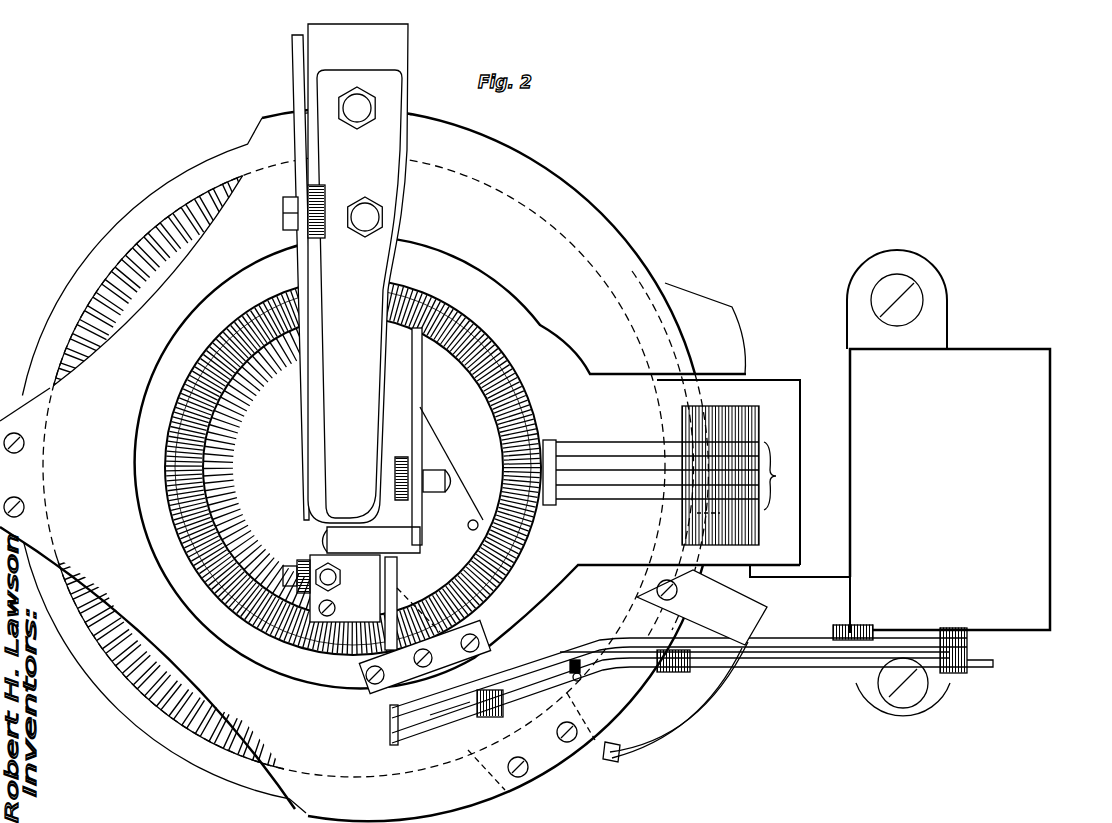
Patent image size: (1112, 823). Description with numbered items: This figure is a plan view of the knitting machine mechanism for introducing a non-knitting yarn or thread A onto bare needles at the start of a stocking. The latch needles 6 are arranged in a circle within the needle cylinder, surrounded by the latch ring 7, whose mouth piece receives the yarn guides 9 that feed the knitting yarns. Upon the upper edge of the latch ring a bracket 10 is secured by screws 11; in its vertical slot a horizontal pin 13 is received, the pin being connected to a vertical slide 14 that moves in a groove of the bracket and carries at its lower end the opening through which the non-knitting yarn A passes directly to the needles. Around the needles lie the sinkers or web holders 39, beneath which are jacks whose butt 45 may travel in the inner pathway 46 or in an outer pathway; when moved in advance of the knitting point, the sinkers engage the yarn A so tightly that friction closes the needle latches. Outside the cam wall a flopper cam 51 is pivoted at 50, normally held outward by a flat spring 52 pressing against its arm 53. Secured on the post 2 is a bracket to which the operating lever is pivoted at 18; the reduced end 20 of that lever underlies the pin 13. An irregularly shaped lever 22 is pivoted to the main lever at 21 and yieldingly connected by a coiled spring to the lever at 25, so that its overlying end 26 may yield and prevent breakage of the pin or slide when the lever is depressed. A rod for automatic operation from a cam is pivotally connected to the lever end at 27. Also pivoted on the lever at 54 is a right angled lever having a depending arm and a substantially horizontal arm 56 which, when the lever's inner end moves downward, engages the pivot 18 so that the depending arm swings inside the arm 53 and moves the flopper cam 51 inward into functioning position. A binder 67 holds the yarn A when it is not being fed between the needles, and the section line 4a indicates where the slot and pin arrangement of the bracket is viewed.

The post 2 is at (857, 607).
The needles 6 is at (206, 349).
The latch ring 7 is at (503, 295).
The yarn guides 9 is at (667, 475).
The bracket 10 is at (390, 647).
The screws 11 is at (359, 674).
The horizontal pin 13 is at (442, 685).
The vertical slide 14 is at (432, 645).
The pivot 18 is at (840, 665).
The reduced end 20 is at (395, 722).
The pivot 21 is at (490, 716).
The irregularly shaped lever 22 is at (542, 677).
The spring connection point 25 is at (575, 660).
The overlying end 26 is at (458, 739).
The pivotal connection 27 is at (965, 672).
The sinkers or web holders 39 is at (240, 441).
The butt 45 is at (118, 283).
The inner pathway 46 is at (133, 243).
The pivot 50 is at (697, 513).
The flopper cam 51 is at (740, 348).
The flat spring 52 is at (697, 710).
The arm 53 is at (590, 765).
The pivot 54 is at (690, 667).
The horizontal arm 56 is at (810, 655).
The binder 67 is at (335, 467).
The non-knitting yarn or thread A is at (447, 452).
The section line 4a is at (405, 582).